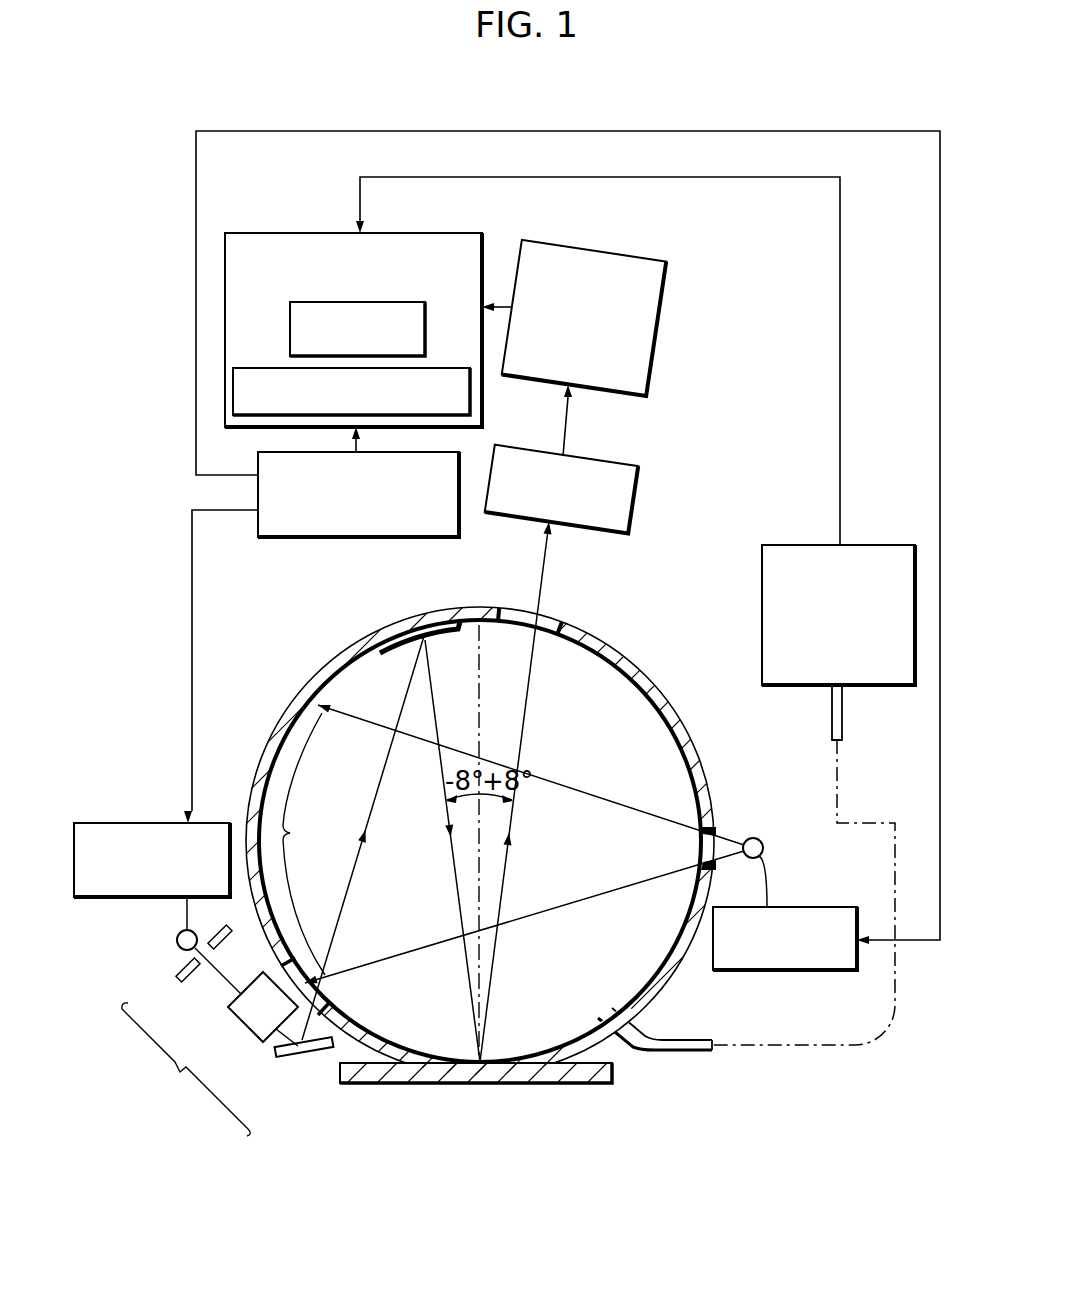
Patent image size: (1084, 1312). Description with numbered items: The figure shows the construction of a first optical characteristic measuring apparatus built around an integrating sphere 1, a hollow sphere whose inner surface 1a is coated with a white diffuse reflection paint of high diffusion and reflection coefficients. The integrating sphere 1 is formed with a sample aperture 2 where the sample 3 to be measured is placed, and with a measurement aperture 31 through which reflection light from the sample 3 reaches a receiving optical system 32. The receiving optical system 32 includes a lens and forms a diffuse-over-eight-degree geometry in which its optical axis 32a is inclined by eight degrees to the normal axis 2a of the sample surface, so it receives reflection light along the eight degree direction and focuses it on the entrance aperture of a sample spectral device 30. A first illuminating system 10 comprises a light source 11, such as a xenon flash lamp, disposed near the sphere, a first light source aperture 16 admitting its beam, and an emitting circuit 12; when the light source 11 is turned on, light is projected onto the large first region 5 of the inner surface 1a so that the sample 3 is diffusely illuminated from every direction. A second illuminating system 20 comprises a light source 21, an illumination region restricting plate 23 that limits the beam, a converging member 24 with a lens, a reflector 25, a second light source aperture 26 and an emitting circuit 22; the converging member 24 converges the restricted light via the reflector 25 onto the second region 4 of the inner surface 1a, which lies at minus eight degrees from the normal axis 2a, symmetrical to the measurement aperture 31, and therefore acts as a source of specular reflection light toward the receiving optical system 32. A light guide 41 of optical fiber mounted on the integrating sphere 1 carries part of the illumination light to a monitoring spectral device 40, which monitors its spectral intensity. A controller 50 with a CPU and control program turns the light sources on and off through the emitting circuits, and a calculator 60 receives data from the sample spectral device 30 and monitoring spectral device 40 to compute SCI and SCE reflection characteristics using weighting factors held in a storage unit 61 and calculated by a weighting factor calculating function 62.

The integrating sphere 1 is at (640, 676).
The inner surface 1a is at (656, 720).
The sample aperture 2 is at (520, 1062).
The normal axis 2a is at (483, 885).
The sample 3 is at (558, 1086).
The second region 4 is at (420, 648).
The first region 5 is at (304, 844).
The first illuminating system 10 is at (785, 899).
The light source 11 is at (746, 859).
The emitting circuit 12 is at (785, 970).
The first light source aperture 16 is at (705, 848).
The second illuminating system 20 is at (228, 1016).
The light source 21 is at (172, 948).
The emitting circuit 22 is at (137, 823).
The illumination region restricting plate 23 is at (185, 980).
The converging member 24 is at (242, 1022).
The reflector 25 is at (285, 1058).
The second light source aperture 26 is at (327, 1006).
The sample spectral device 30 is at (665, 308).
The measurement aperture 31 is at (548, 625).
The receiving optical system 32 is at (640, 474).
The optical axis 32a is at (532, 710).
The monitoring spectral device 40 is at (866, 545).
The light guide 41 is at (843, 700).
The controller 50 is at (258, 463).
The calculator 60 is at (283, 232).
The storage unit 61 is at (290, 322).
The weighting factor calculating function 62 is at (438, 368).